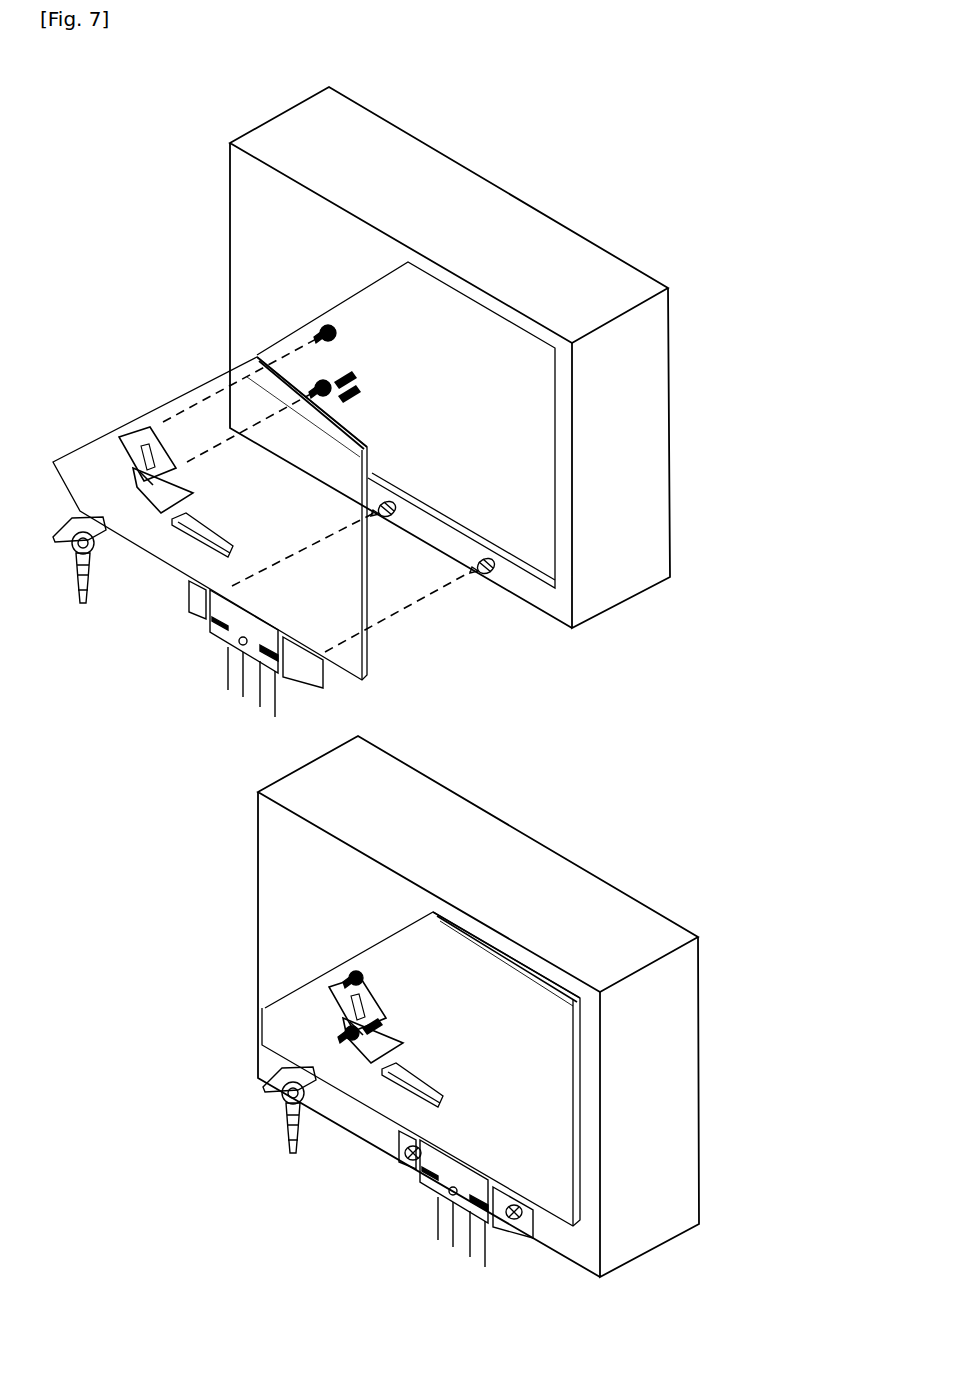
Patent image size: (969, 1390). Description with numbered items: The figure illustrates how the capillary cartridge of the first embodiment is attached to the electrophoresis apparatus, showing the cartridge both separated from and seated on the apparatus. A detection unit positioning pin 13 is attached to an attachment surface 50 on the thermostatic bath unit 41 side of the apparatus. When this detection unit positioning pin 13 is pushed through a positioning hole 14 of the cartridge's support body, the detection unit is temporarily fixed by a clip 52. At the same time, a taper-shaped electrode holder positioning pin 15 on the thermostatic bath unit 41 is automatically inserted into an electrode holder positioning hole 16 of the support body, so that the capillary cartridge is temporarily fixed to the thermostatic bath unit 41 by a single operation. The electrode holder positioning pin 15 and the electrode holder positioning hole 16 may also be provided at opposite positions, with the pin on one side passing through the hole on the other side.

The thermostatic bath unit 41 is at (605, 355).
The attachment surface 50 is at (532, 477).
The positioning hole 14 is at (147, 428).
The detection unit positioning pin 13 is at (313, 327).
The clip 52 is at (320, 375).
The electrode holder positioning hole 16 is at (325, 655).
The electrode holder positioning pin 15 is at (468, 573).